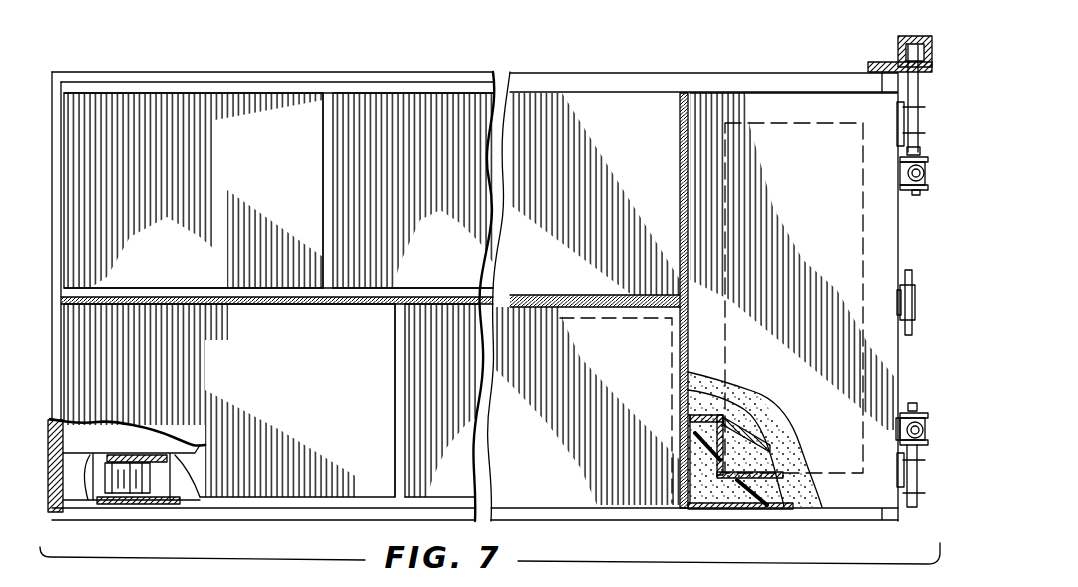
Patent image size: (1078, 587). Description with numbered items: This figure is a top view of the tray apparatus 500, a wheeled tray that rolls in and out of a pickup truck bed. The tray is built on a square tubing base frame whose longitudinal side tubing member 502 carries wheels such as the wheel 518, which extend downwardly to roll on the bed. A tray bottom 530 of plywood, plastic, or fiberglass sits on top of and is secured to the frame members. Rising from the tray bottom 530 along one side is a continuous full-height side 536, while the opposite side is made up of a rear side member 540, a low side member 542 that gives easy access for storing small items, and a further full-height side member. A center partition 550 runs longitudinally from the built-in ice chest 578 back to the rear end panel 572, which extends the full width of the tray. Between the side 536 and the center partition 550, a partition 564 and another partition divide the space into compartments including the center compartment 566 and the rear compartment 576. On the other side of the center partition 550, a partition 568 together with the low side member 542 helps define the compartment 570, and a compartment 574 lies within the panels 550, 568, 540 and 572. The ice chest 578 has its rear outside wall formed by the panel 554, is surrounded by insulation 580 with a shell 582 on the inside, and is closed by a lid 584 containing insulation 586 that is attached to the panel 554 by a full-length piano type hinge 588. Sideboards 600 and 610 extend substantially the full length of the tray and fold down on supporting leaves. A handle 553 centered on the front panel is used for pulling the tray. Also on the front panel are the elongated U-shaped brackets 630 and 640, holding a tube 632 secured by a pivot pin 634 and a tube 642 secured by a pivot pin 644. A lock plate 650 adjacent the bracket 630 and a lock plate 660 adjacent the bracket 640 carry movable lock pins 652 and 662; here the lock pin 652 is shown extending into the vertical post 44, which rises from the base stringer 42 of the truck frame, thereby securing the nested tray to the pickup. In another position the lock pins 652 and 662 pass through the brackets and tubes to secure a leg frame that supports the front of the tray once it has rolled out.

The base stringer 42 is at (882, 62).
The vertical post 44 is at (914, 36).
The tray apparatus 500 is at (585, 62).
The side tubing member 502 is at (186, 447).
The wheel 518 is at (138, 495).
The tray bottom 530 is at (270, 378).
The side 536 is at (290, 490).
The rear side member 540 is at (152, 92).
The low side member 542 is at (432, 93).
The center partition 550 is at (200, 297).
The handle 553 is at (916, 288).
The panel 554 is at (680, 477).
The partition 564 is at (397, 428).
The center compartment 566 is at (423, 348).
The partition 568 is at (327, 157).
The compartment 570 is at (368, 127).
The rear end panel 572 is at (60, 262).
The compartment 574 is at (213, 120).
The rear compartment 576 is at (260, 305).
The ice chest 578 is at (748, 118).
The insulation 580 is at (706, 425).
The shell 582 is at (722, 442).
The lid 584 is at (797, 145).
The insulation 586 is at (778, 420).
The hinge 588 is at (682, 222).
The sideboard 600 is at (288, 82).
The sideboard 610 is at (588, 520).
The bracket 630 is at (898, 173).
The tube 632 is at (928, 172).
The pivot pin 634 is at (917, 153).
The bracket 640 is at (921, 417).
The tube 642 is at (900, 423).
The pivot pin 644 is at (912, 403).
The lock plate 650 is at (898, 117).
The lock pin 652 is at (921, 94).
The lock plate 660 is at (898, 466).
The lock pin 662 is at (910, 508).